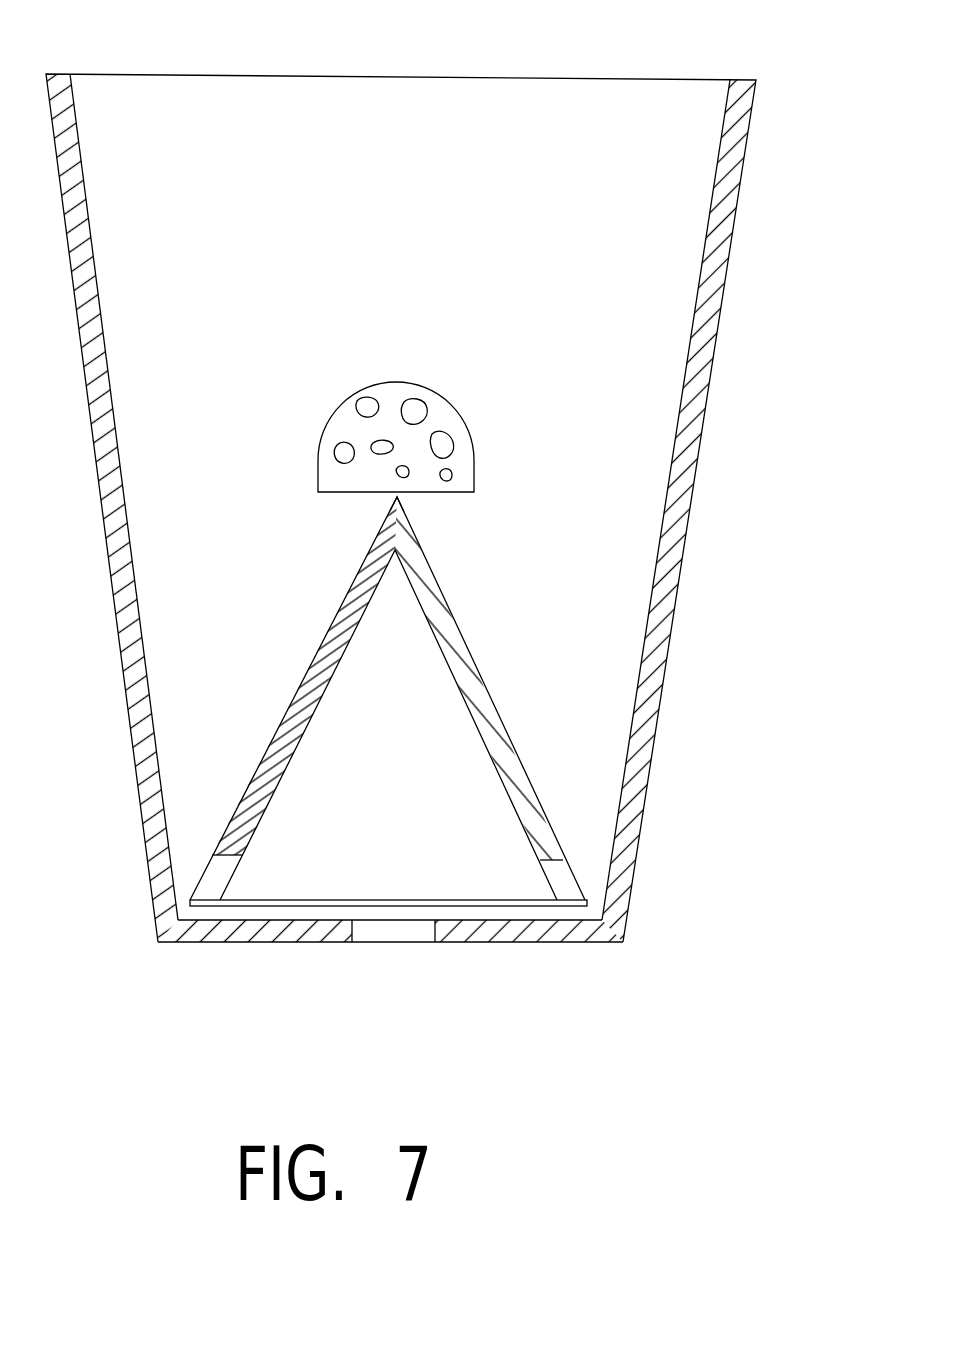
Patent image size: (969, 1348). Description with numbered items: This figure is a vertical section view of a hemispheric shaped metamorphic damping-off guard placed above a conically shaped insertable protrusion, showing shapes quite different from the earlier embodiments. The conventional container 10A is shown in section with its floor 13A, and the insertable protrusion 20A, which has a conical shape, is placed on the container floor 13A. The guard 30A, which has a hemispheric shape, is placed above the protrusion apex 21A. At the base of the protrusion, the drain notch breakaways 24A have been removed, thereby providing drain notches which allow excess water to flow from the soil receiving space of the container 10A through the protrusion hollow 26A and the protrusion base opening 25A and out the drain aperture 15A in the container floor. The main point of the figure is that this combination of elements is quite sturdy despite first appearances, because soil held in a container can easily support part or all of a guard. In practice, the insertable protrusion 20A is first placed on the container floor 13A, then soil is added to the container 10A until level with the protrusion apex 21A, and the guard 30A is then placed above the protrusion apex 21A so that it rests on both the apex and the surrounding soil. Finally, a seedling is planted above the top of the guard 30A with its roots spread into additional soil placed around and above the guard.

The conventional container 10A is at (740, 80).
The container floor 13A is at (590, 918).
The drain aperture 15A is at (378, 938).
The insertable protrusion 20A is at (440, 692).
The protrusion apex 21A is at (390, 500).
The drain notch breakaways 24A is at (232, 866).
The protrusion base opening 25A is at (527, 920).
The protrusion hollow 26A is at (475, 890).
The guard 30A is at (442, 396).